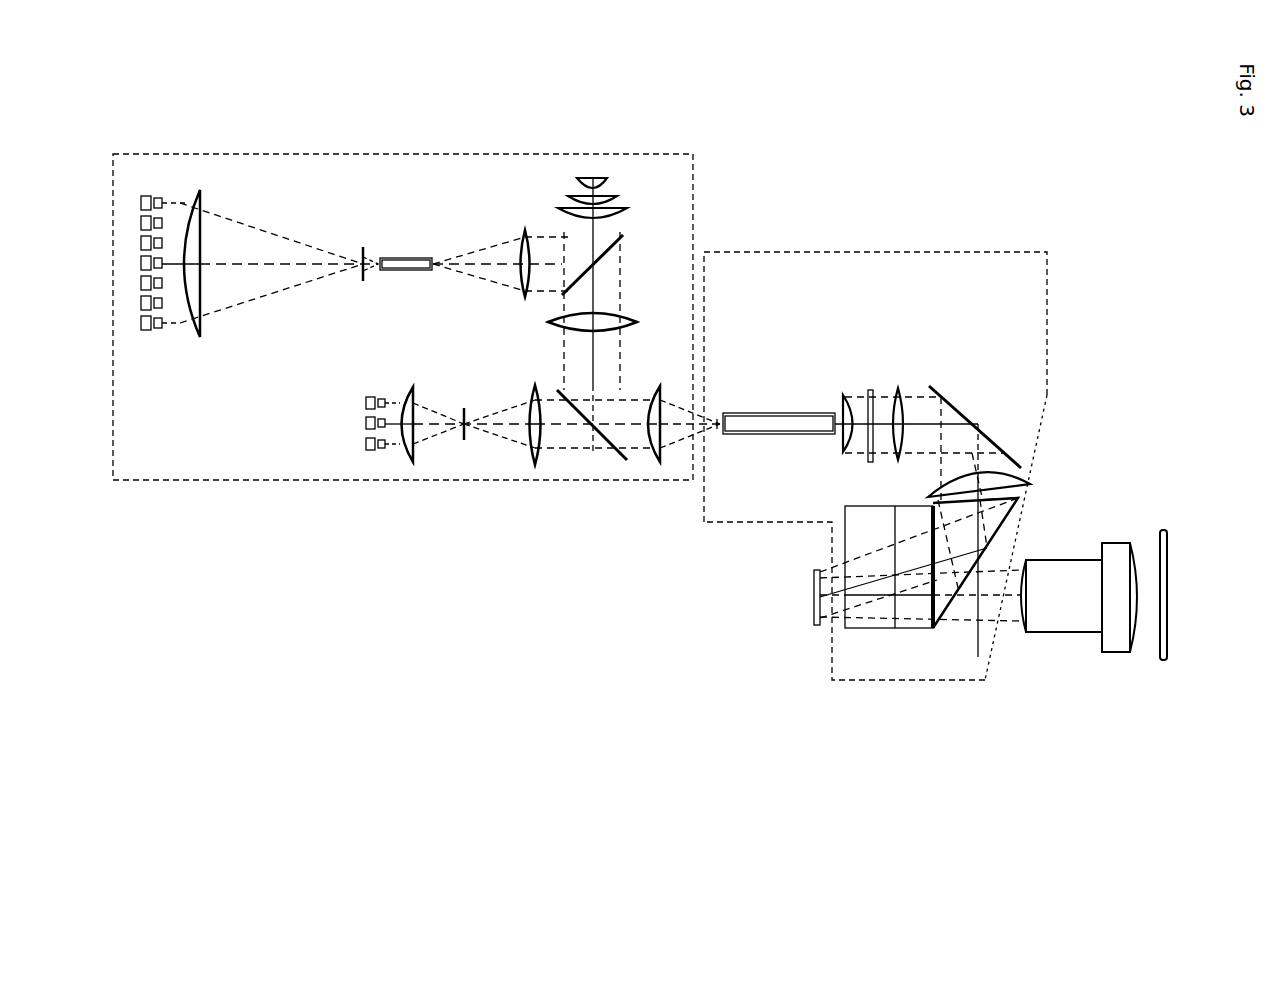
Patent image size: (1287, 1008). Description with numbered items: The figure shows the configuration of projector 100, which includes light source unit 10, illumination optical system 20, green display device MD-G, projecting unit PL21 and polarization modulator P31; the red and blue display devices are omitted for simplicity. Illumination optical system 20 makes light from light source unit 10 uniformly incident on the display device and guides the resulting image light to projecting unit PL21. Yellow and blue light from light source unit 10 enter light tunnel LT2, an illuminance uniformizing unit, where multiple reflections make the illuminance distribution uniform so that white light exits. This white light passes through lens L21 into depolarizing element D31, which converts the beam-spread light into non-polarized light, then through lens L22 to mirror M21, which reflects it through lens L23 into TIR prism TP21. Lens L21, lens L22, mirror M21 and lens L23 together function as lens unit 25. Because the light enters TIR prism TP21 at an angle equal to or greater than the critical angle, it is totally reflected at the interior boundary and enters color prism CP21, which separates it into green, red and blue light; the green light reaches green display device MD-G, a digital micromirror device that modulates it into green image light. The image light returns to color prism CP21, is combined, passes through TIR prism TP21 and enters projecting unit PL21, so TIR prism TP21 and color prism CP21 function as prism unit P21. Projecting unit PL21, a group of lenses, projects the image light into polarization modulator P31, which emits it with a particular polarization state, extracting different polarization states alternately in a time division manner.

The projector 100 is at (881, 75).
The light source unit 10 is at (425, 153).
The illumination optical system 20 is at (989, 250).
The lens unit 25 is at (1023, 300).
The light tunnel LT2 is at (770, 413).
The lens L21 is at (848, 395).
The lens L22 is at (898, 392).
The mirror M21 is at (956, 392).
The lens L23 is at (1028, 484).
The depolarizing element D31 is at (870, 463).
The green display device MD-G is at (814, 596).
The color prism CP21 is at (880, 620).
The TIR prism TP21 is at (933, 628).
The prism unit P21 is at (1065, 725).
The projecting unit PL21 is at (1100, 542).
The polarization modulator P31 is at (1160, 662).